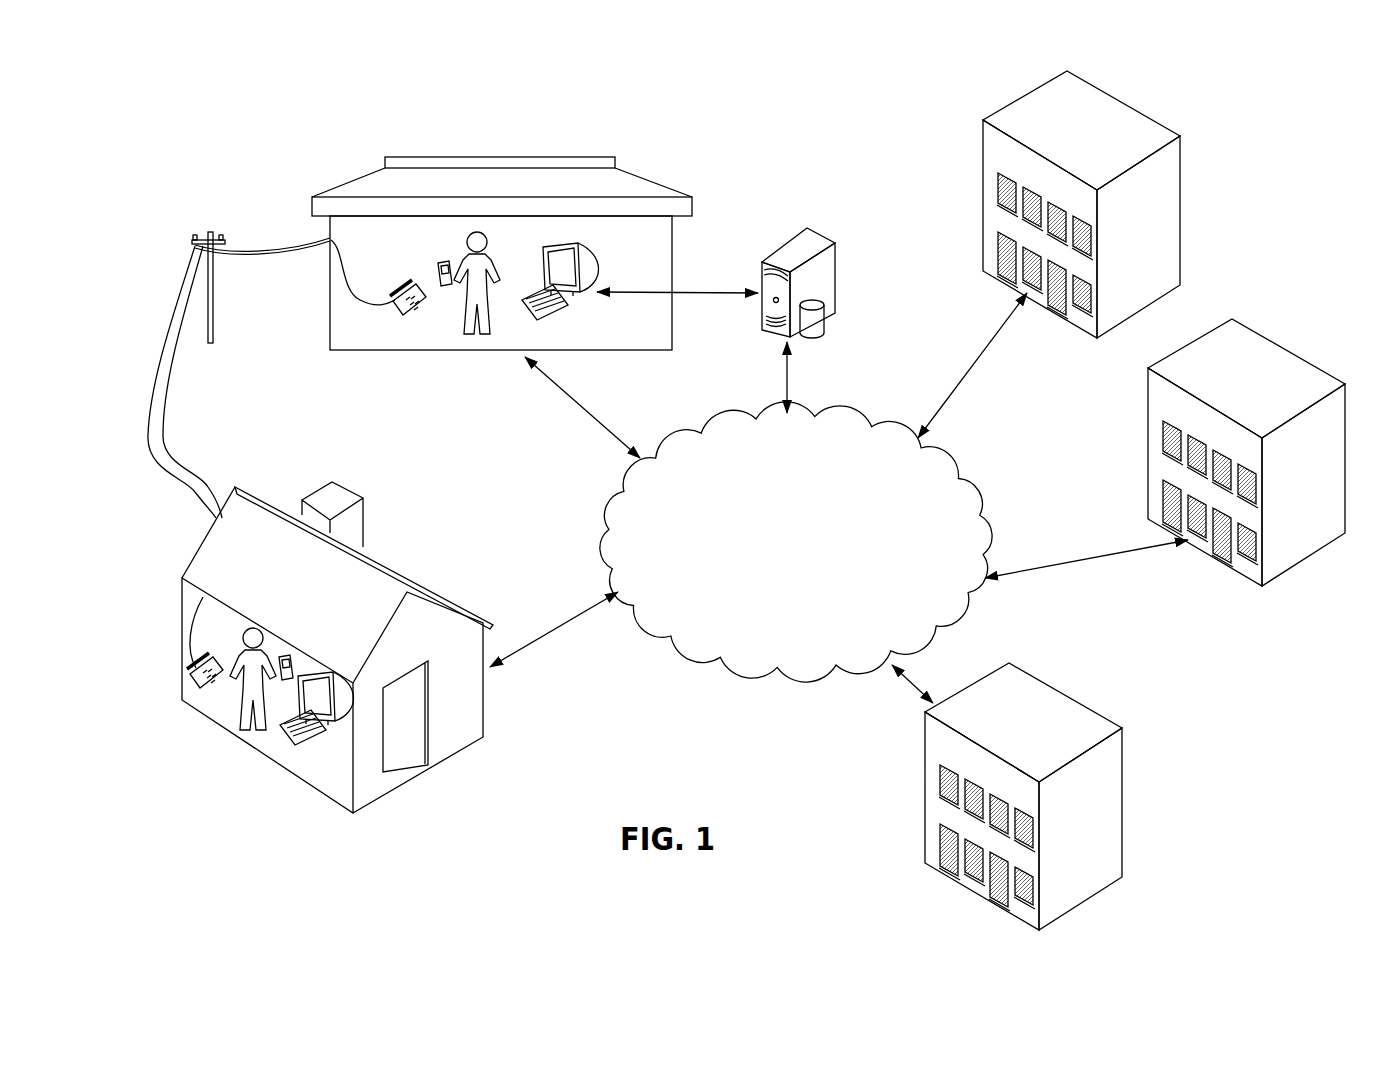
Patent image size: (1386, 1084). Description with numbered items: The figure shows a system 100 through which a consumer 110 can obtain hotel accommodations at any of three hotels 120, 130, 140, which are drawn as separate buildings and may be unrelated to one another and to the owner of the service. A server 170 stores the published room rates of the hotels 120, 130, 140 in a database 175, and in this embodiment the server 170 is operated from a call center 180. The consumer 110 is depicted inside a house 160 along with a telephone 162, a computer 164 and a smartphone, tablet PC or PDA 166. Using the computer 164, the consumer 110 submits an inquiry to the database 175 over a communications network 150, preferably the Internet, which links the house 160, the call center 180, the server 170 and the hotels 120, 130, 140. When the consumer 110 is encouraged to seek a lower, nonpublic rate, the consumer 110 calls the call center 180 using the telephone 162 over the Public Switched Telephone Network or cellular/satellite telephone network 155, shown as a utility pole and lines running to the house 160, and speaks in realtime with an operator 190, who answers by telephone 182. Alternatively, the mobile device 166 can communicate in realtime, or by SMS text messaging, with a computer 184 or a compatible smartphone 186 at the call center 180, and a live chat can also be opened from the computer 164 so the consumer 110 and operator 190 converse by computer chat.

The system 100 is at (818, 146).
The consumer 110 is at (237, 727).
The hotel 120 is at (1104, 140).
The hotel 130 is at (1269, 392).
The hotel 140 is at (1044, 726).
The communications network 150 is at (820, 616).
The telephone network 155 is at (213, 298).
The house 160 is at (323, 602).
The telephone 162 is at (196, 690).
The computer 164 is at (350, 717).
The smartphone, tablet PC or PDA 166 is at (288, 660).
The server 170 is at (786, 253).
The database 175 is at (821, 326).
The call center 180 is at (365, 188).
The telephone 182 is at (403, 309).
The computer 184 is at (592, 300).
The smartphone 186 is at (440, 258).
The operator 190 is at (485, 332).